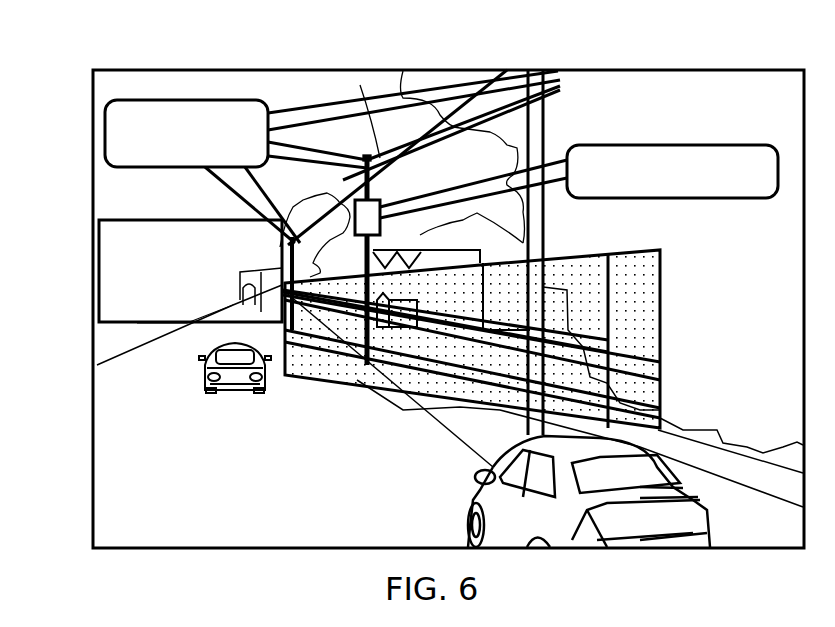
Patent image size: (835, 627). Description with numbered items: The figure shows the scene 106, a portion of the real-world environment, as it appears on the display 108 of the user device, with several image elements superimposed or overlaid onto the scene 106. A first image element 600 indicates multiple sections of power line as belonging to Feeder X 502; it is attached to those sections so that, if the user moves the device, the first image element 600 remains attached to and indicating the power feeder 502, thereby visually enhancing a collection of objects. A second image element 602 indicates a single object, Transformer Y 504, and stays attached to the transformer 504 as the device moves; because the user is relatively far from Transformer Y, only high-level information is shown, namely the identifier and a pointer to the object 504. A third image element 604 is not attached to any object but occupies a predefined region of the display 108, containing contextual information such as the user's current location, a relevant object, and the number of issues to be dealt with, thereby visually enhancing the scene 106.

The scene 106 is at (280, 88).
The display 108 is at (193, 70).
The power feeder 502 is at (368, 155).
The transformer 504 is at (385, 205).
The first image element 600 is at (105, 128).
The second image element 602 is at (612, 144).
The third image element 604 is at (99, 250).